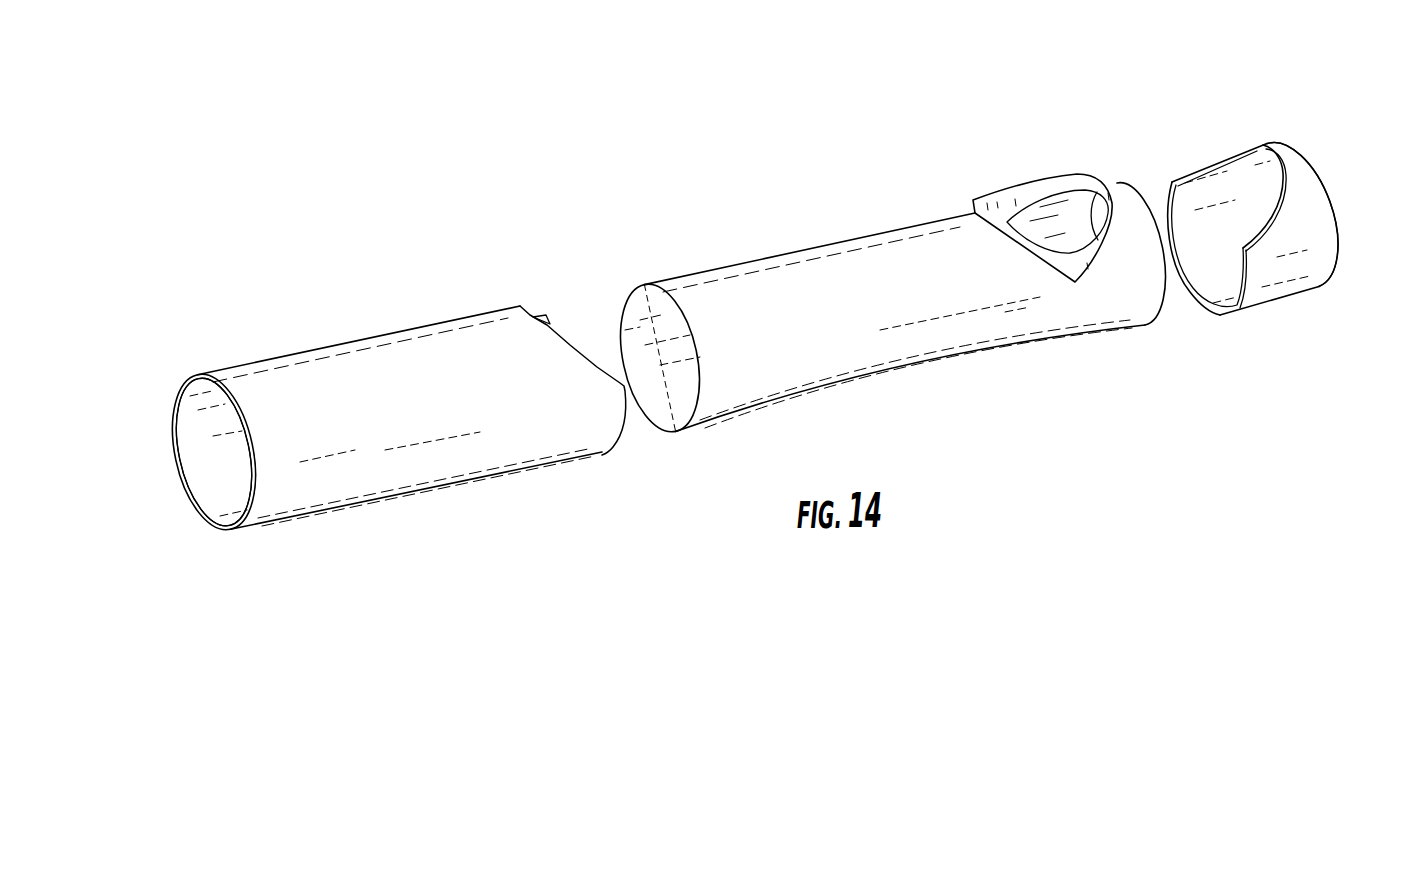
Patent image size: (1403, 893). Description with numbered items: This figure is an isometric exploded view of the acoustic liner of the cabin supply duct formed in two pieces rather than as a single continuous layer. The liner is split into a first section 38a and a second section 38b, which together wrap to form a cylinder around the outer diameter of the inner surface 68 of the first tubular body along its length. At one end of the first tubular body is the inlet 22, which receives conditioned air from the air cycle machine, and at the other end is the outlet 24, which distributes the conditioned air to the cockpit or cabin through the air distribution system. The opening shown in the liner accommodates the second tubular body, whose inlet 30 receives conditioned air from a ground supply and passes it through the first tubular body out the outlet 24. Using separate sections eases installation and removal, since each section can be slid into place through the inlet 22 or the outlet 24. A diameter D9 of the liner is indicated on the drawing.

The inlet 22 is at (1335, 209).
The outlet 24 is at (200, 458).
The inlet 30 is at (1048, 194).
The first section 38a is at (403, 293).
The second section 38b is at (1252, 122).
The inner surface 68 is at (975, 292).
The diameter D9 is at (621, 190).